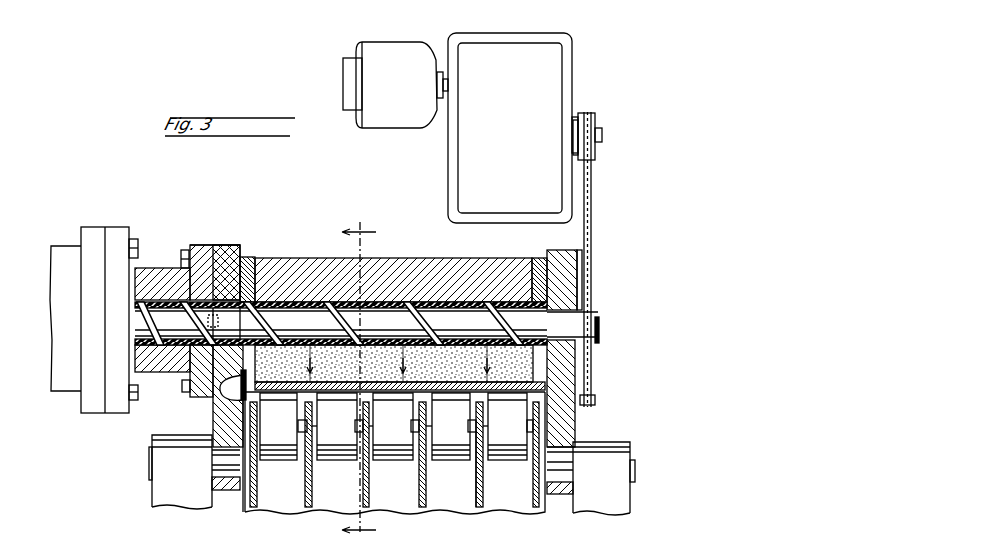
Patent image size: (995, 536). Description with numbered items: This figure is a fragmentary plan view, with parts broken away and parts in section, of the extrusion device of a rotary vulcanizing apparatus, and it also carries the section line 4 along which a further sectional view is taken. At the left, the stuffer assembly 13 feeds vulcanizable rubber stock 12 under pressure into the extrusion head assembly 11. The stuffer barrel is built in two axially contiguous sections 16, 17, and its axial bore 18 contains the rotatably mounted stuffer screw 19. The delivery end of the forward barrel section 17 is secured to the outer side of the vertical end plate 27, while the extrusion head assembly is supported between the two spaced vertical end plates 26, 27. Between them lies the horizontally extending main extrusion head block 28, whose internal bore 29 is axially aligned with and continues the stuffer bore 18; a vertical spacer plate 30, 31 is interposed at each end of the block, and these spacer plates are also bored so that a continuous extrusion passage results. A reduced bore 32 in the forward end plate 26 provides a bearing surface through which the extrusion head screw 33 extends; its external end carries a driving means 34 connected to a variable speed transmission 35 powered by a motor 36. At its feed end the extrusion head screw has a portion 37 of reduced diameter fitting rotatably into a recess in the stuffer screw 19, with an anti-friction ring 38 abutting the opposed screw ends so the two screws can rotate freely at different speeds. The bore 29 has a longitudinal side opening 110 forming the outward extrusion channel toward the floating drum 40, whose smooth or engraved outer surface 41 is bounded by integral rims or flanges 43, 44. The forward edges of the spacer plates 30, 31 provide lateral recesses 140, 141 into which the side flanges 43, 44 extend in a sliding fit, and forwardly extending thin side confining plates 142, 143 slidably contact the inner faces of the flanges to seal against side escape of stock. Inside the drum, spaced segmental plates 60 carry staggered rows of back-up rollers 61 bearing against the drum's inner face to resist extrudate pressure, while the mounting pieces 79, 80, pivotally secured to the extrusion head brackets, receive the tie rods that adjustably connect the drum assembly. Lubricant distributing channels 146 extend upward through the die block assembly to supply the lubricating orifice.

The section line 4— 4 is at (368, 379).
The extrusion head assembly 11 is at (226, 224).
The vulcanizable rubber stock 12 is at (162, 268).
The stuffer assembly 13 is at (123, 211).
The rear stuffer barrel section 16 is at (55, 380).
The forward stuffer barrel section 17 is at (176, 268).
The axial bore 18 is at (140, 352).
The stuffer screw 19 is at (138, 320).
The forward vertical end plate 26 is at (575, 262).
The vertical end plate 27 is at (232, 262).
The main extrusion head block 28 is at (300, 266).
The extrusion head bore 29 is at (450, 300).
The vertical spacer plate 30 is at (537, 262).
The vertical spacer plate 31 is at (250, 262).
The reduced bore 32 is at (575, 300).
The extrusion head screw 33 is at (572, 317).
The driving means 34 is at (596, 340).
The variable speed transmission 35 is at (550, 70).
The motor 36 is at (400, 52).
The reduced diameter portion 37 is at (210, 312).
The interposed ring 38 is at (226, 272).
The floating cylindrical drum 40 is at (333, 393).
The outer drum surface 41 is at (392, 393).
The drum rim or flange 43 is at (573, 415).
The drum rim or flange 44 is at (212, 408).
The segmental plates 60 is at (478, 489).
The back-up rollers 61 is at (335, 462).
The mounting piece 79 is at (622, 504).
The mounting piece 80 is at (160, 490).
The longitudinal side opening 110 is at (545, 363).
The lateral recess 140 is at (545, 385).
The lateral recess 141 is at (214, 361).
The side confining plate 142 is at (520, 395).
The side confining plate 143 is at (227, 428).
The lubricant distributing channels 146 is at (443, 394).